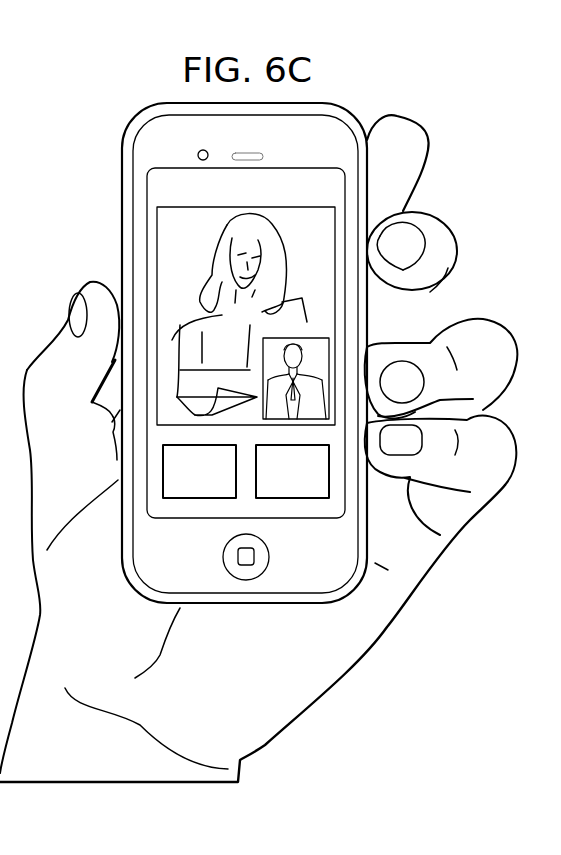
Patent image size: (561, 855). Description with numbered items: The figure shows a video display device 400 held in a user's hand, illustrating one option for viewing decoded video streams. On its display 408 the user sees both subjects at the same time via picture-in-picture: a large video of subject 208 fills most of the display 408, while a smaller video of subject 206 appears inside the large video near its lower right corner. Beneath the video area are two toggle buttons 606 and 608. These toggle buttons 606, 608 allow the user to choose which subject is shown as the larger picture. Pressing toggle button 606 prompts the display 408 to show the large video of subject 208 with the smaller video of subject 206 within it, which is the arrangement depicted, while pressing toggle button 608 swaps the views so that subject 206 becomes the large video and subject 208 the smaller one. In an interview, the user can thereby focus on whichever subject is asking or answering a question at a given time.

The video display device 400 is at (122, 160).
The display 408 is at (293, 180).
The subject 208 is at (222, 248).
The subject 206 is at (303, 353).
The toggle button 606 is at (179, 483).
The toggle button 608 is at (272, 483).